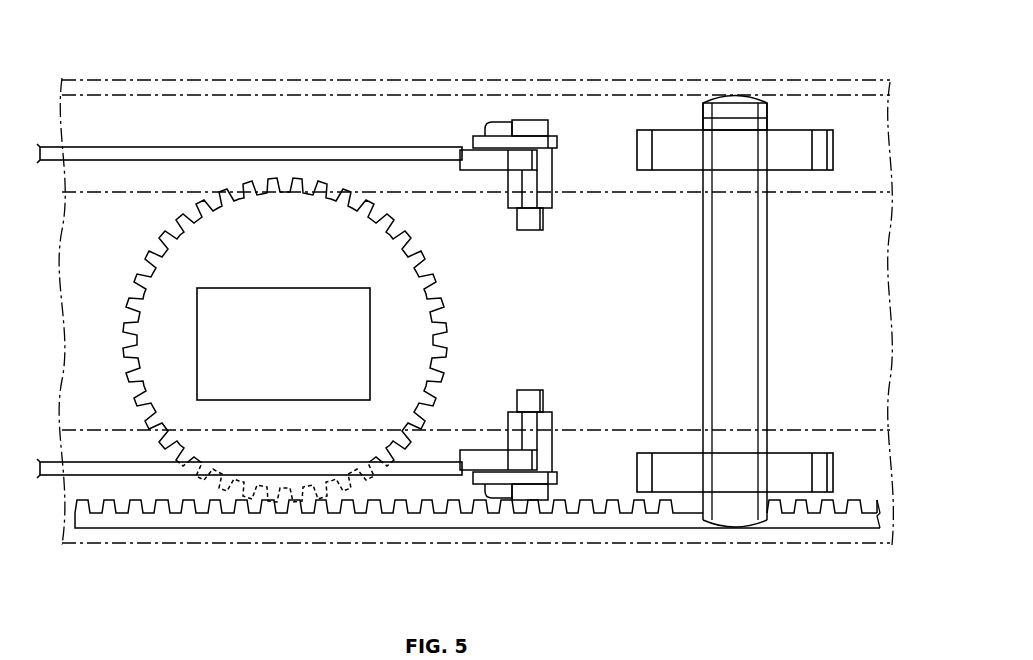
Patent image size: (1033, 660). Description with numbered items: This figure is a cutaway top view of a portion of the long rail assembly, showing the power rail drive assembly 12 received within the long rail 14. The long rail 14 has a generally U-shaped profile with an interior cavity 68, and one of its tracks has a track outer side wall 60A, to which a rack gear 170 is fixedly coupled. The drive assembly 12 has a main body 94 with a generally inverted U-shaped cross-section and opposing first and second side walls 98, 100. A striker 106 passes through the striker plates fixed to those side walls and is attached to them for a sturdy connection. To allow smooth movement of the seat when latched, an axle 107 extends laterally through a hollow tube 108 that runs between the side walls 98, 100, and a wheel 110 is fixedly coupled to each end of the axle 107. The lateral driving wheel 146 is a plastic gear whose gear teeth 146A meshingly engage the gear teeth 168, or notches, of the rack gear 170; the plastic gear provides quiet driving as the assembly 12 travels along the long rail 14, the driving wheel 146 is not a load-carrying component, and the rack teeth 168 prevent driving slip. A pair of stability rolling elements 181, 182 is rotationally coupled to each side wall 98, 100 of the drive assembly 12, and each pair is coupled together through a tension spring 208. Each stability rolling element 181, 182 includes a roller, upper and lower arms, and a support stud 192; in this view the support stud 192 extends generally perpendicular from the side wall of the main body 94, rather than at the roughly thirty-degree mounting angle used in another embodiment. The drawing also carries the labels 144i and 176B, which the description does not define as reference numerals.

The power rail drive assembly 12 is at (579, 46).
The long rail 14 is at (674, 76).
The track outer side wall 60A is at (882, 521).
The interior cavity 68 is at (843, 320).
The main body 94 is at (861, 419).
The first side wall 98 is at (95, 193).
The second side wall 100 is at (600, 428).
The striker 106 is at (773, 122).
The axle 107 is at (759, 96).
The hollow tube 108 is at (771, 242).
The wheel 110 is at (839, 144).
The housing block 144i is at (255, 285).
The lateral driving wheel 146 is at (316, 183).
The gear teeth 146A is at (278, 193).
The gear teeth 168 is at (373, 513).
The rack gear 170 is at (317, 532).
The axis 176B is at (268, 388).
The stability rolling element 181 is at (469, 140).
The stability rolling element 182 is at (478, 491).
The support stud 192 is at (561, 452).
The tension spring 208 is at (185, 145).